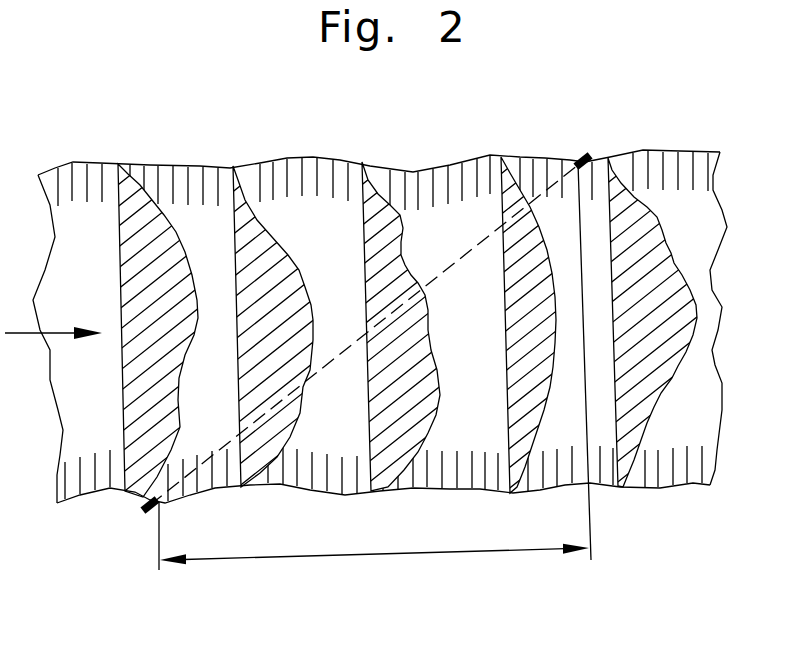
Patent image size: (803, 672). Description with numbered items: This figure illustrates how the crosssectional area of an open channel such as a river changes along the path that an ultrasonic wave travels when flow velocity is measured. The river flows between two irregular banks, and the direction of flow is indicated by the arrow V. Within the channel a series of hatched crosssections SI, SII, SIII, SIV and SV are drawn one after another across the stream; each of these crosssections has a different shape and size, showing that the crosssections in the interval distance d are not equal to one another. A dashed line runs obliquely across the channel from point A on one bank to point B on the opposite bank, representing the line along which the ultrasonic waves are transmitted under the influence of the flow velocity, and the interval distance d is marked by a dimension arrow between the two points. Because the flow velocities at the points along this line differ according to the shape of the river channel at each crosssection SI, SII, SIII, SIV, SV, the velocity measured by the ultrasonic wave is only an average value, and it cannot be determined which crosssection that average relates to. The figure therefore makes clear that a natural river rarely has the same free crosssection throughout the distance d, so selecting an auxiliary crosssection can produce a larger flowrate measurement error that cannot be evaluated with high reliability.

The crosssection SI is at (182, 290).
The crosssection SII is at (298, 289).
The crosssection SIII is at (428, 294).
The crosssection SIV is at (567, 292).
The crosssection SV is at (674, 293).
The point A is at (141, 510).
The point B is at (591, 156).
The interval distance d is at (375, 366).
The direction of movement V is at (53, 313).